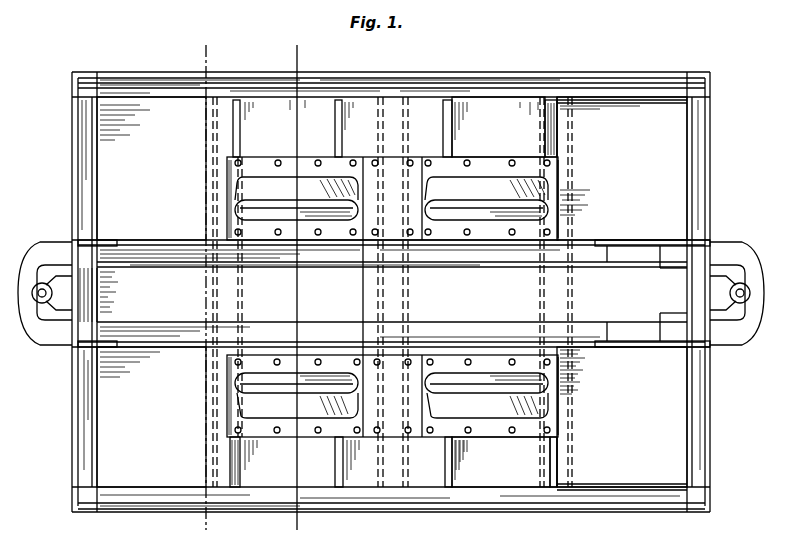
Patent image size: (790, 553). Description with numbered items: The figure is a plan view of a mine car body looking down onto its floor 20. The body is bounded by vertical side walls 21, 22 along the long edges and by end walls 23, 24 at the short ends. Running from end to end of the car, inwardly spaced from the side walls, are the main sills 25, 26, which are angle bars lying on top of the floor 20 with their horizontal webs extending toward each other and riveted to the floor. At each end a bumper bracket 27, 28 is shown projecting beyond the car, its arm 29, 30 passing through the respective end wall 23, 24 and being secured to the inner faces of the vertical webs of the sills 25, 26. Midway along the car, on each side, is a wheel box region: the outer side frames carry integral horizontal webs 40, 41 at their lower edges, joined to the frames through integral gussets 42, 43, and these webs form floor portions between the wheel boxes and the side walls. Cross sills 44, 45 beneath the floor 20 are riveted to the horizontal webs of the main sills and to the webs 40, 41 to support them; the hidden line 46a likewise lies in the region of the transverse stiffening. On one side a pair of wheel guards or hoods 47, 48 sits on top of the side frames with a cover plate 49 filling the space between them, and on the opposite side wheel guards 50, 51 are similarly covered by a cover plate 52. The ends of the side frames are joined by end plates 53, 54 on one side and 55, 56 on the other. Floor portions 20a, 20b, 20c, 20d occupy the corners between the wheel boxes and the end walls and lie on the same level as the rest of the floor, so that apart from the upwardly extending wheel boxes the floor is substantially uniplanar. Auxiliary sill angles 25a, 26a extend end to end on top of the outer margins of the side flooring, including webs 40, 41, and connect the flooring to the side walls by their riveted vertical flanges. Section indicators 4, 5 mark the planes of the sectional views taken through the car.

The section line 4- 4 is at (198, 52).
The section line 5- 5 is at (280, 52).
The floor 20 is at (391, 293).
The floor portion 20a is at (127, 115).
The floor portion 20b is at (137, 473).
The floor portion 20c is at (663, 112).
The floor portion 20d is at (663, 473).
The vertical side wall 21 is at (408, 72).
The vertical side wall 22 is at (437, 508).
The end wall 23 is at (73, 401).
The end wall 24 is at (712, 399).
The main sill 25 is at (133, 239).
The auxiliary sill angle 25a is at (634, 97).
The main sill 26 is at (132, 348).
The auxiliary sill angle 26a is at (636, 468).
The bumper bracket 27 is at (50, 255).
The bumper bracket 28 is at (729, 241).
The arm 29 is at (103, 340).
The arm 30 is at (633, 338).
The horizontal web 40 is at (528, 108).
The horizontal web 41 is at (515, 473).
The gusset 42 is at (245, 126).
The gusset 43 is at (239, 476).
The cross sill 44 is at (206, 134).
The cross sill 45 is at (405, 295).
The right hidden channel 46a is at (580, 208).
The wheel guard or hood 47 is at (268, 168).
The wheel guard or hood 48 is at (487, 165).
The cover plate 49 is at (388, 165).
The wheel guard 50 is at (310, 425).
The wheel guard 51 is at (478, 425).
The cover plate 52 is at (388, 422).
The end plate 53 is at (228, 173).
The end plate 54 is at (560, 172).
The end plate 55 is at (228, 402).
The end plate 56 is at (570, 396).